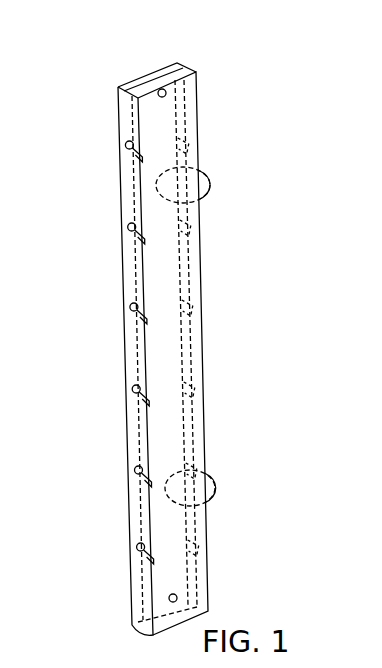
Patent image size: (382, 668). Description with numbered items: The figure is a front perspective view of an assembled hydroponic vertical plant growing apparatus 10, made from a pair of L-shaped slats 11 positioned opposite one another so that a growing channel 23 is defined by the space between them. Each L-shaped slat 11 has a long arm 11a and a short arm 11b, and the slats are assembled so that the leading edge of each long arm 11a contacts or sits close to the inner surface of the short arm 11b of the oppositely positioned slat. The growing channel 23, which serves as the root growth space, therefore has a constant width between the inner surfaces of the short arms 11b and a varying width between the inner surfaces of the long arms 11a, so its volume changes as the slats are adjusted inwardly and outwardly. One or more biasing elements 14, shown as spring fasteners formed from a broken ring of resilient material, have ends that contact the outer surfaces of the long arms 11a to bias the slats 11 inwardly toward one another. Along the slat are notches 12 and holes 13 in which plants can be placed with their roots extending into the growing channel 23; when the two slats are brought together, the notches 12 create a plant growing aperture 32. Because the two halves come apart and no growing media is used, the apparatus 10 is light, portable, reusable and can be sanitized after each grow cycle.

The hydroponic vertical plant growing apparatus 10 is at (102, 272).
The L-shaped slat 11 is at (176, 295).
The long arm 11a is at (161, 70).
The short arm 11b is at (128, 173).
The notch 12 is at (157, 397).
The hole 13 is at (168, 95).
The biasing element 14 is at (213, 185).
The growing channel 23 is at (153, 81).
The plant growing aperture 32 is at (132, 393).